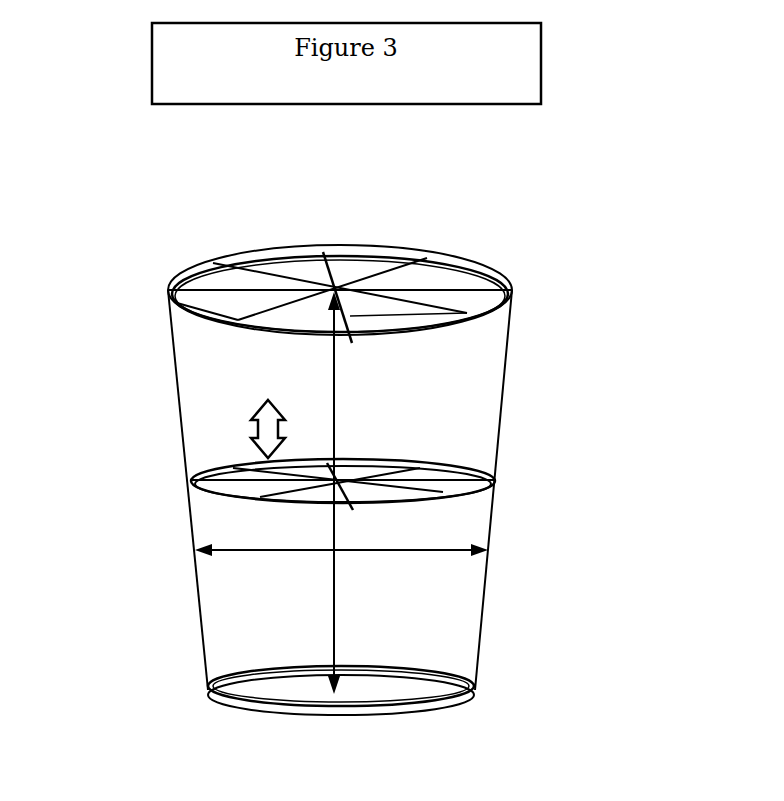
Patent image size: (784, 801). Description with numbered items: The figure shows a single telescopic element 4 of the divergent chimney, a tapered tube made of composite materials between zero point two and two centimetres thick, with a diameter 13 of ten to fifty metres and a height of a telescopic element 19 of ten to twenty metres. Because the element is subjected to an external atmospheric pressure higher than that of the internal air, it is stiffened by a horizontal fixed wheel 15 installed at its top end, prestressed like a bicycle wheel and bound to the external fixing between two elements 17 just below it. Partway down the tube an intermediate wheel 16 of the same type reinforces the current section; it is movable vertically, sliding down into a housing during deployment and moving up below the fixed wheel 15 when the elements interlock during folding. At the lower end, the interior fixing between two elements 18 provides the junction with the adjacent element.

The telescopic element 4 is at (193, 534).
The diameter 13 is at (341, 568).
The fixed wheel 15 is at (417, 297).
The intermediate wheel 16 is at (440, 476).
The external fixing between two elements 17 is at (168, 302).
The interior fixing between two elements 18 is at (207, 690).
The height of a telescopic element 19 is at (304, 493).